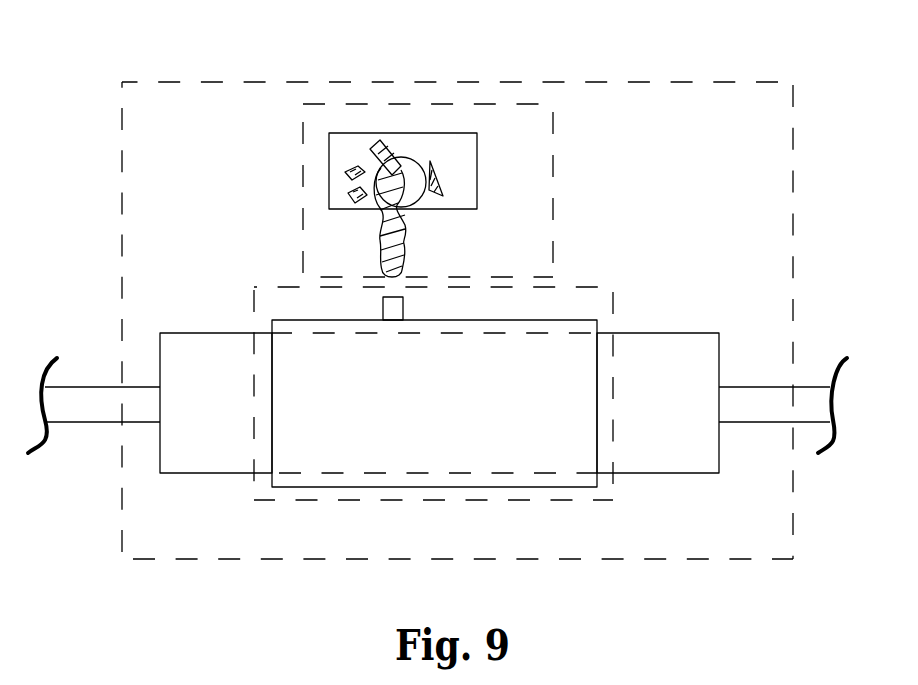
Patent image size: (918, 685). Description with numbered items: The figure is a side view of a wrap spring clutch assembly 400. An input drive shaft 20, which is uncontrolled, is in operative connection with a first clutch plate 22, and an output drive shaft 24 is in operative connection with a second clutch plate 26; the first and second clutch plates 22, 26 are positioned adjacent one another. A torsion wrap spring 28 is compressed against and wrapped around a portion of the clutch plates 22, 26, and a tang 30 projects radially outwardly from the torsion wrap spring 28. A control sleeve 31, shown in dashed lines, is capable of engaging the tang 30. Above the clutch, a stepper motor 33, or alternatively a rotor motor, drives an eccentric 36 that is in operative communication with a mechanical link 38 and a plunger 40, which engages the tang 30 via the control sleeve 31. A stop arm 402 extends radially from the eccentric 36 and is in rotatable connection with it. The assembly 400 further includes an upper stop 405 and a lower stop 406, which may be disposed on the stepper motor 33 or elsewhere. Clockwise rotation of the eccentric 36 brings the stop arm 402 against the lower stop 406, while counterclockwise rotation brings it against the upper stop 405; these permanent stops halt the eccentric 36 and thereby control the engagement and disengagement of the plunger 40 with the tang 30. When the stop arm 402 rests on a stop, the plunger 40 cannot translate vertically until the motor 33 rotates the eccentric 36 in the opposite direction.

The wrap spring clutch assembly 400 is at (622, 82).
The control sleeve 31 is at (573, 287).
The stepper motor 33 is at (463, 163).
The eccentric 36 is at (442, 188).
The stop arm 402 is at (394, 163).
The mechanical link 38 is at (412, 226).
The plunger 40 is at (405, 255).
The upper stop 405 is at (355, 166).
The lower stop 406 is at (350, 204).
The tang 30 is at (403, 305).
The torsion wrap spring 28 is at (442, 488).
The first clutch plate 22 is at (200, 473).
The second clutch plate 26 is at (695, 467).
The input drive shaft 20 is at (105, 422).
The output drive shaft 24 is at (775, 422).